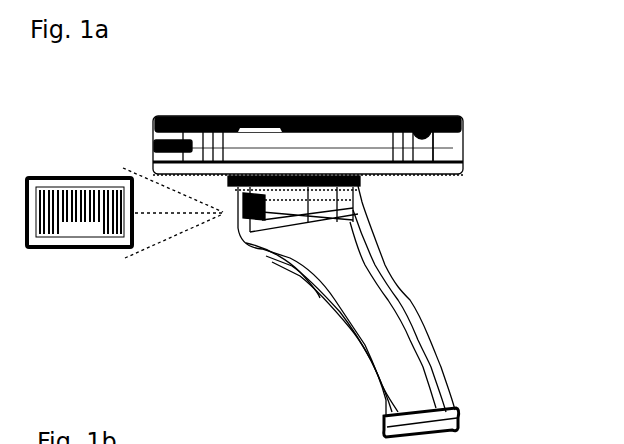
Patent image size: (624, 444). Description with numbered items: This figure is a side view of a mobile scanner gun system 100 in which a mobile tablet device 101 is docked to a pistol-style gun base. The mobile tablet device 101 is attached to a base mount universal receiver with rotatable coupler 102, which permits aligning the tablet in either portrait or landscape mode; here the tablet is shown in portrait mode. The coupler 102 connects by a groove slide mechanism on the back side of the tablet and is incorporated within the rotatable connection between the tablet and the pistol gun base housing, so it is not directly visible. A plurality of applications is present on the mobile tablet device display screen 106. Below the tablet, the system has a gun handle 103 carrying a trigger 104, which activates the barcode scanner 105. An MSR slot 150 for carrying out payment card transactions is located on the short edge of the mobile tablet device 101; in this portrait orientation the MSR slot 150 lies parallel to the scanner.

The mobile scanner gun system 100 is at (103, 125).
The mobile tablet device 101 is at (450, 145).
The base mount universal receiver with rotatable coupler 102 is at (365, 190).
The gun handle 103 is at (370, 357).
The trigger 104 is at (320, 300).
The barcode scanner 105 is at (348, 265).
The mobile tablet device display screen 106 is at (282, 115).
The MSR slot 150 is at (153, 144).